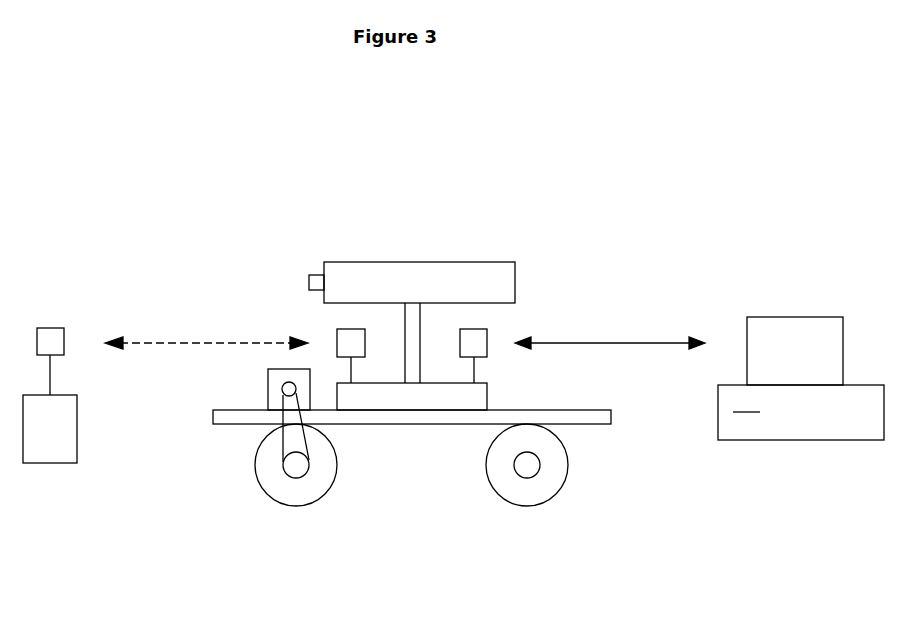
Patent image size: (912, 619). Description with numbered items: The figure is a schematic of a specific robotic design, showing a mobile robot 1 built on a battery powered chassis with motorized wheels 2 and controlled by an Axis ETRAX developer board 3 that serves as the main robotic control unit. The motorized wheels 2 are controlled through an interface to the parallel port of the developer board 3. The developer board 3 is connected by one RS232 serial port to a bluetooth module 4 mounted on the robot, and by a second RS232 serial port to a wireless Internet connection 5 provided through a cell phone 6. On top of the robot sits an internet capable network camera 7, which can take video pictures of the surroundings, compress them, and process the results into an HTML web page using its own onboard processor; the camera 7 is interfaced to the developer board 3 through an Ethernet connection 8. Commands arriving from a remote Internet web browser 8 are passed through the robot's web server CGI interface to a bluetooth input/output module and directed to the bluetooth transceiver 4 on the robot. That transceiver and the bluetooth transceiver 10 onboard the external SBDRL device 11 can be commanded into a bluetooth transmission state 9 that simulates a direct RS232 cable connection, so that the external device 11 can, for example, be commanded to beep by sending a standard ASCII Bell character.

The mobile robot 1 is at (412, 506).
The motorized wheels 2 is at (390, 437).
The Axis ETRAX 100 Developer Board 3 is at (412, 397).
The bluetooth module 4 is at (344, 353).
The wireless Internet connection 5 is at (610, 330).
The cell phone 6 is at (479, 347).
The network camera 7 is at (412, 282).
The Ethernet connection 8 is at (638, 371).
The bluetooth transmission state 9 is at (206, 330).
The bluetooth transceiver 10 is at (43, 345).
The external SBDRL device 11 is at (50, 429).